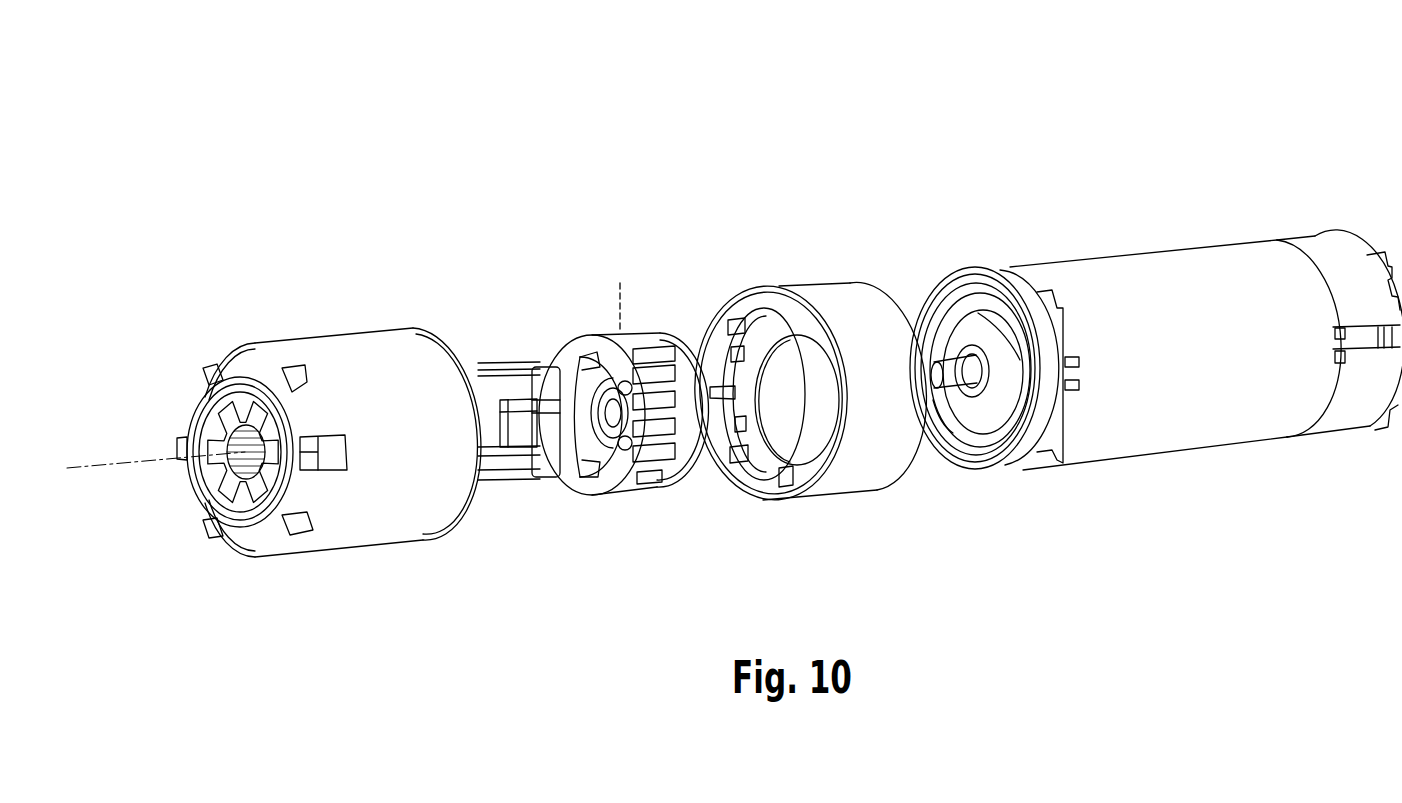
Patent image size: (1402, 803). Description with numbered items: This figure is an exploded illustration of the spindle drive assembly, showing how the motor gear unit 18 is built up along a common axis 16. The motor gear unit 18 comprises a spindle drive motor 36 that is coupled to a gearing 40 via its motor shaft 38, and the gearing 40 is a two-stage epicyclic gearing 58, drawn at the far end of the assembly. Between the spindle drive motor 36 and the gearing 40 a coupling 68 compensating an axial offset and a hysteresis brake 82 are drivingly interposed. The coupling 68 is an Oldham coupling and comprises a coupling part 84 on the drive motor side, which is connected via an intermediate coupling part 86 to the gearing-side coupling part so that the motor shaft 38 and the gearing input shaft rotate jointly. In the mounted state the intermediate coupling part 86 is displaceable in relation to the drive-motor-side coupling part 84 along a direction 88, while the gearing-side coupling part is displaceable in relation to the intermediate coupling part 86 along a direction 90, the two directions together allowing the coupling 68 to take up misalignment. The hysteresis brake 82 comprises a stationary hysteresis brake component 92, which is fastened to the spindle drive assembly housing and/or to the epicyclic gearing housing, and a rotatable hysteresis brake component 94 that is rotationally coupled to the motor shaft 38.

The axis of rotation 16 is at (87, 467).
The motor gear unit 18 is at (960, 140).
The spindle drive motor 36 is at (1156, 346).
The motor shaft 38 is at (956, 395).
The gearing 40 is at (329, 372).
The two-stage epicyclic gearing 58 is at (318, 297).
The coupling 68 is at (624, 370).
The hysteresis brake 82 is at (807, 331).
The coupling part on the drive motor side 84 is at (663, 467).
The intermediate coupling part 86 is at (502, 470).
The direction 88 is at (622, 308).
The direction 90 is at (533, 474).
The stationary hysteresis brake component 92 is at (857, 307).
The rotatable hysteresis brake component 94 is at (700, 450).